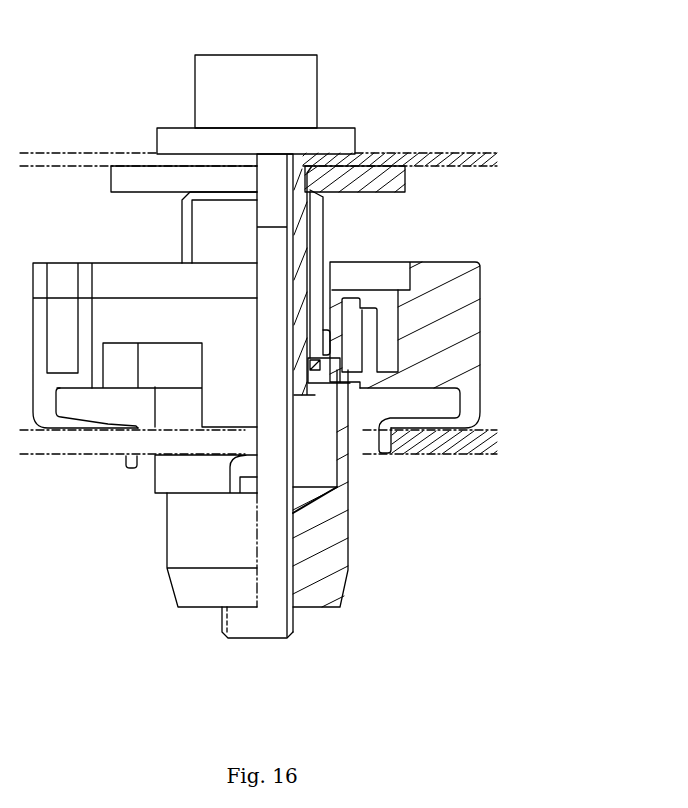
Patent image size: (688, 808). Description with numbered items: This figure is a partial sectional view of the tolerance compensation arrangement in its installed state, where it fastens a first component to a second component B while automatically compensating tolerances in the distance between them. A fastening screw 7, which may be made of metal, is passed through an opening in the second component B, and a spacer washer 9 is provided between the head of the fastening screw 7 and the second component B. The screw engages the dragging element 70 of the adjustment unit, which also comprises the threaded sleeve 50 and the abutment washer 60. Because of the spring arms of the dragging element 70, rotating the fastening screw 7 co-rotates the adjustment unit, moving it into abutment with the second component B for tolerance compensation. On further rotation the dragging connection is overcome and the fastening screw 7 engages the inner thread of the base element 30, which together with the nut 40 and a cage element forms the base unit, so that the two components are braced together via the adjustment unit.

The fastening screw 7 is at (272, 75).
The spacer washer 9 is at (335, 137).
The second component B is at (445, 155).
The abutment washer 60 is at (405, 180).
The threaded sleeve 50 is at (316, 227).
The dragging element 70 is at (472, 280).
The nut 40 is at (333, 333).
The base element 30 is at (348, 521).